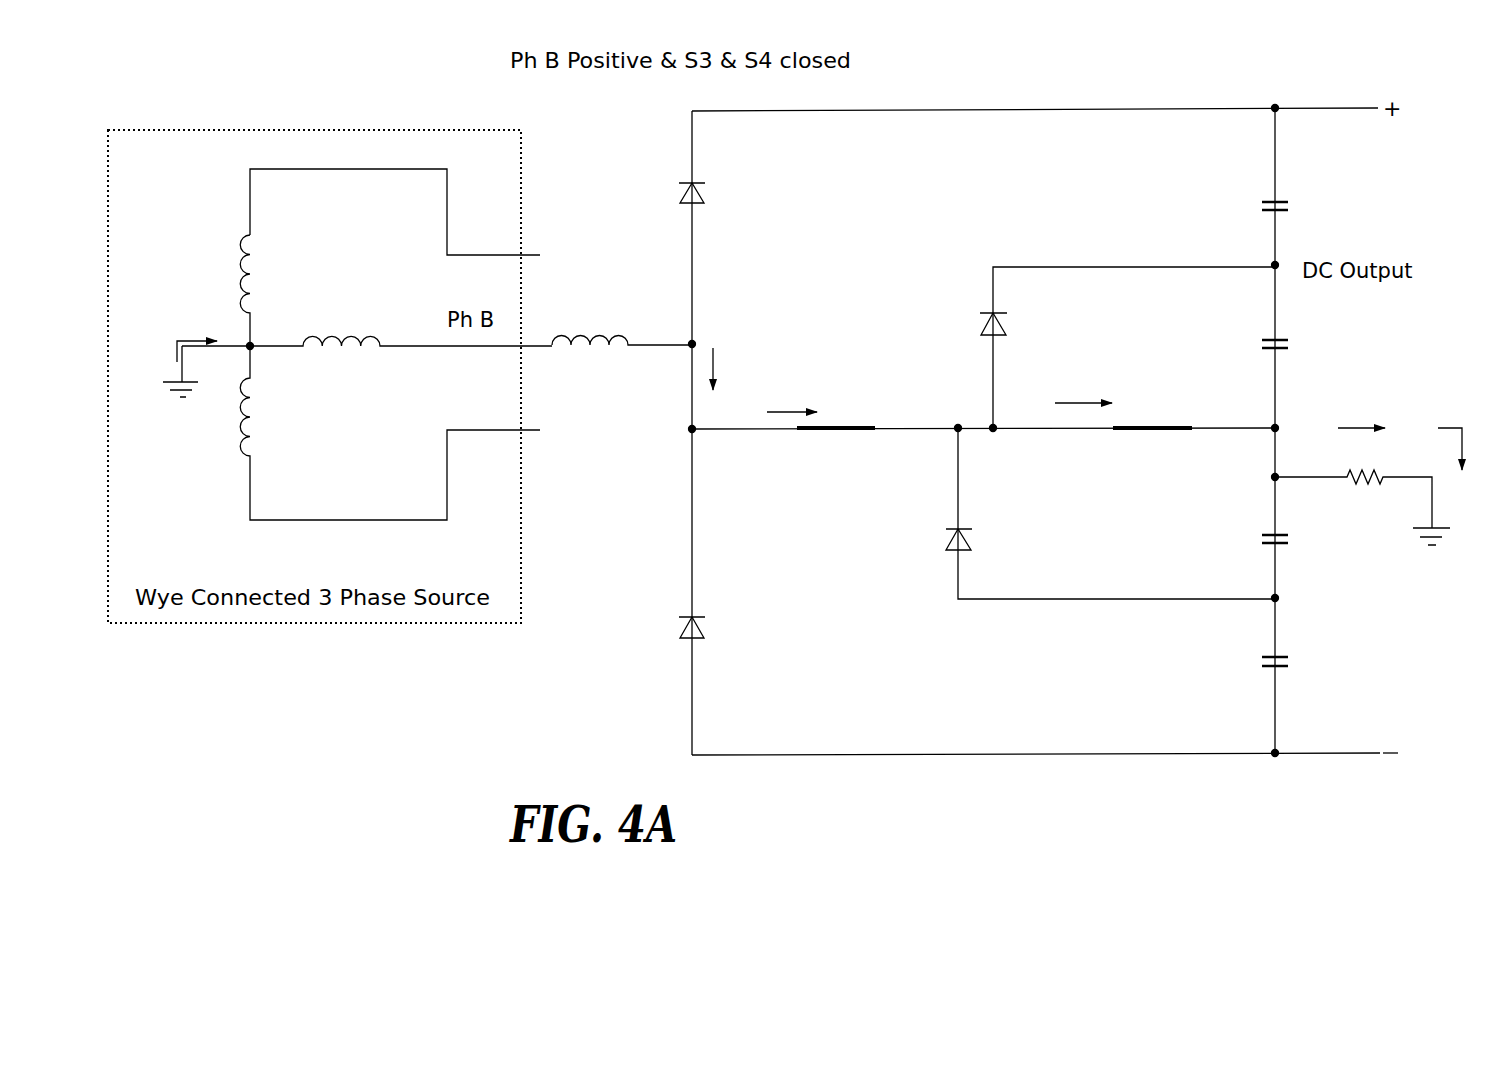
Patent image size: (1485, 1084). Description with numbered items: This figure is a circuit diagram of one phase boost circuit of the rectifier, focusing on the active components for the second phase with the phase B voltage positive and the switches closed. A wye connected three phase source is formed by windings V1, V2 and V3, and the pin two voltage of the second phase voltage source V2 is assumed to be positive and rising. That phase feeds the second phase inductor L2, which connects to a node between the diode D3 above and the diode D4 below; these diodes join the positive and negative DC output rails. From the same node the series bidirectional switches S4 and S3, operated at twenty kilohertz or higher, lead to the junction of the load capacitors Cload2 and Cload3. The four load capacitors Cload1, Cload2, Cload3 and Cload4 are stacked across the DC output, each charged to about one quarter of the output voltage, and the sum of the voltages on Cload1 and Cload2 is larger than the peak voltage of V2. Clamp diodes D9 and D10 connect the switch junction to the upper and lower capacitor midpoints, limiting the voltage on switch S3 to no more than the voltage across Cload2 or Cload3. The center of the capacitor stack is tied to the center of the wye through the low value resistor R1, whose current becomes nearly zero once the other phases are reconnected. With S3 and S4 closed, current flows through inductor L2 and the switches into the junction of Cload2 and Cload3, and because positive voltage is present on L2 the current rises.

The wye source winding V1 is at (390, 257).
The second phase voltage source V2 is at (401, 325).
The wye source winding V3 is at (390, 433).
The second phase inductor L2 is at (615, 324).
The diode D3 is at (714, 195).
The diode D4 is at (713, 629).
The diode D9 is at (1127, 347).
The diode D10 is at (1110, 513).
The bidirectional switch S3 is at (1135, 436).
The bidirectional switch S4 is at (832, 442).
The load capacitor Cload1 is at (1314, 206).
The load capacitor Cload2 is at (1314, 345).
The load capacitor Cload3 is at (1314, 540).
The load capacitor Cload4 is at (1314, 663).
The low value resistor R1 is at (1368, 486).